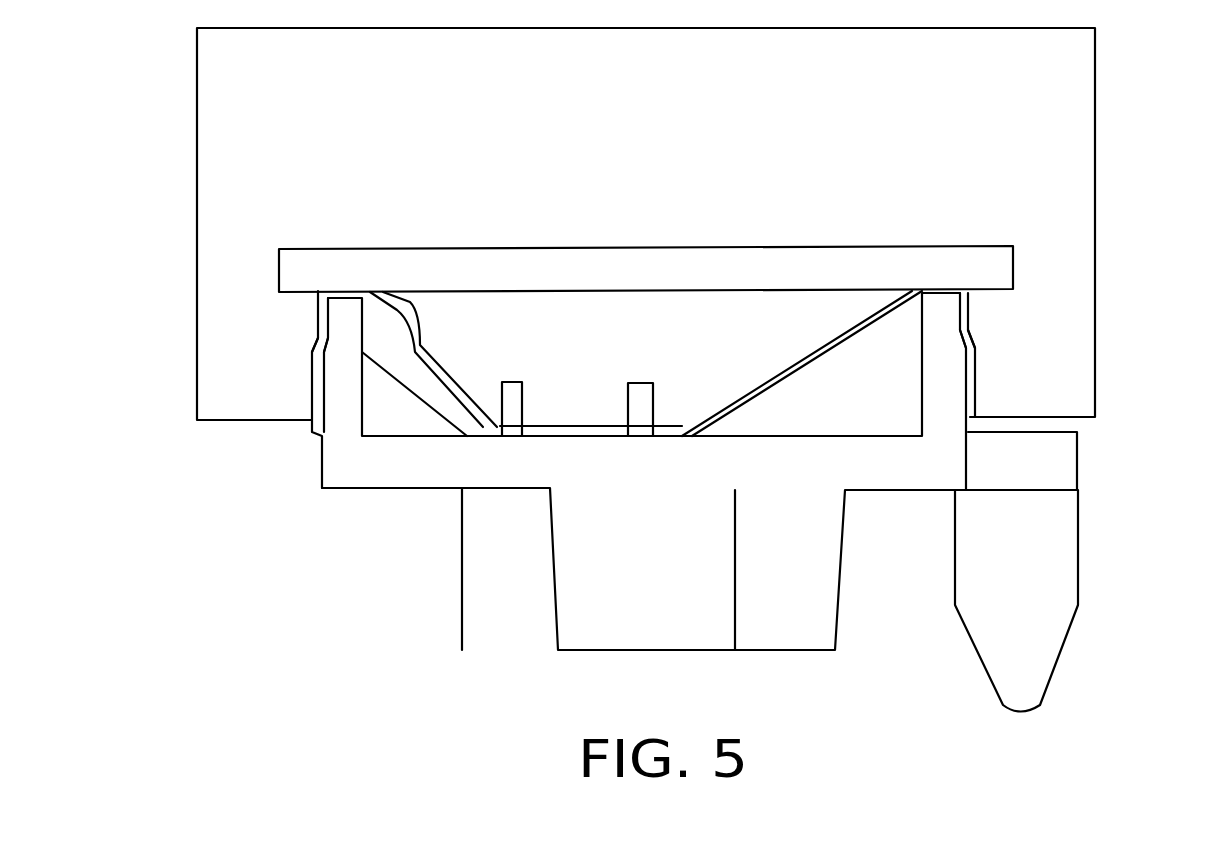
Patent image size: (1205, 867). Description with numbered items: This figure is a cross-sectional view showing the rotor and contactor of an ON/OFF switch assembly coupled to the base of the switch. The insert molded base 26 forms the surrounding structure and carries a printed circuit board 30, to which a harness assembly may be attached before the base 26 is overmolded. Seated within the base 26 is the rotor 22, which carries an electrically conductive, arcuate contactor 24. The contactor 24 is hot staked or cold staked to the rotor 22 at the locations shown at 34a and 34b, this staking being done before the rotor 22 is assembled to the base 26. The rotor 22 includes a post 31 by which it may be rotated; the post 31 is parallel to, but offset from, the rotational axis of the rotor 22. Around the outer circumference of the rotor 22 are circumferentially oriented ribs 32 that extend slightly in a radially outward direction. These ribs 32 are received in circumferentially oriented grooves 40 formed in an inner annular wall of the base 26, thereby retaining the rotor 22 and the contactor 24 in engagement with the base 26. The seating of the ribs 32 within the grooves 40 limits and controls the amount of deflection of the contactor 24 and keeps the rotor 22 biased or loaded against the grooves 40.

The rotor 22 is at (485, 578).
The contactor 24 is at (790, 367).
The base 26 is at (660, 143).
The printed circuit board 30 is at (655, 285).
The post 31 is at (1037, 606).
The ribs 32 is at (313, 350).
The stake 34a is at (521, 382).
The stake 34b is at (650, 383).
The grooves 40 is at (313, 358).